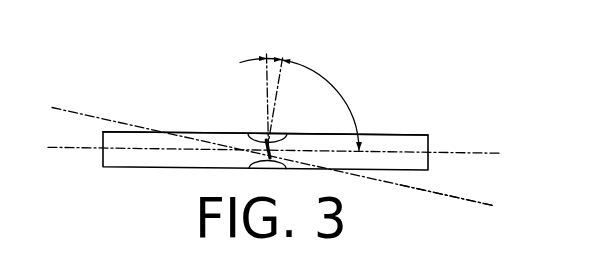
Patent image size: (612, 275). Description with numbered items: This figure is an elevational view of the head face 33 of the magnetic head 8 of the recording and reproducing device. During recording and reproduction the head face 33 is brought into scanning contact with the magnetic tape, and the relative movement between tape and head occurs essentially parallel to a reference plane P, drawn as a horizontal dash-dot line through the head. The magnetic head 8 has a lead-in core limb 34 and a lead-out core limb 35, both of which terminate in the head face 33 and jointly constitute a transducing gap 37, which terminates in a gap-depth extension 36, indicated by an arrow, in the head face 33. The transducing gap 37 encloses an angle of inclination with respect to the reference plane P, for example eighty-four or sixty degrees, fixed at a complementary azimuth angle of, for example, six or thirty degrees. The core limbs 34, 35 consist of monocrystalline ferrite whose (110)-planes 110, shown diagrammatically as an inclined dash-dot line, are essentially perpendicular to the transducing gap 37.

The head face 33 is at (117, 157).
The lead-in core limb 34 is at (208, 133).
The lead-out core limb 35 is at (392, 134).
The gap-depth extension 36 is at (267, 153).
The transducing gap 37 is at (267, 146).
The (110)-planes 110 is at (100, 117).
The reference plane P is at (457, 153).
The magnetic head 8 is at (447, 206).